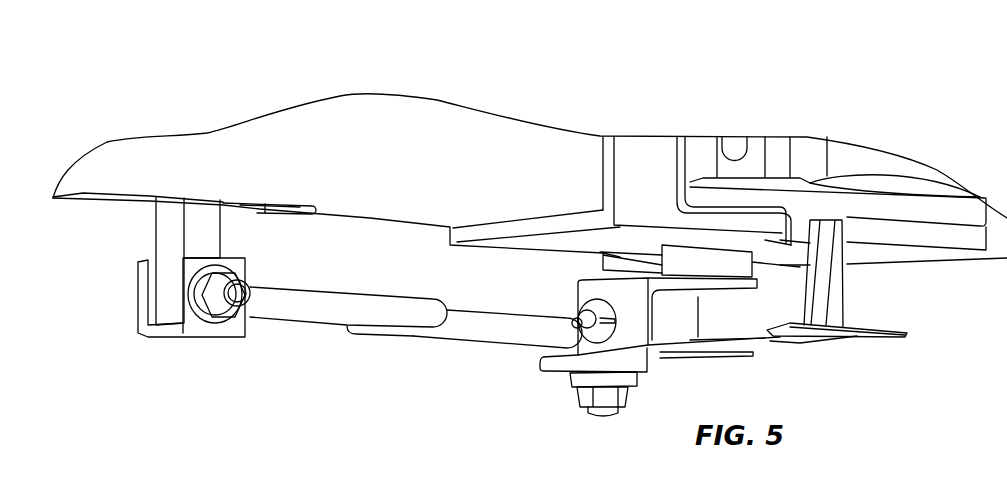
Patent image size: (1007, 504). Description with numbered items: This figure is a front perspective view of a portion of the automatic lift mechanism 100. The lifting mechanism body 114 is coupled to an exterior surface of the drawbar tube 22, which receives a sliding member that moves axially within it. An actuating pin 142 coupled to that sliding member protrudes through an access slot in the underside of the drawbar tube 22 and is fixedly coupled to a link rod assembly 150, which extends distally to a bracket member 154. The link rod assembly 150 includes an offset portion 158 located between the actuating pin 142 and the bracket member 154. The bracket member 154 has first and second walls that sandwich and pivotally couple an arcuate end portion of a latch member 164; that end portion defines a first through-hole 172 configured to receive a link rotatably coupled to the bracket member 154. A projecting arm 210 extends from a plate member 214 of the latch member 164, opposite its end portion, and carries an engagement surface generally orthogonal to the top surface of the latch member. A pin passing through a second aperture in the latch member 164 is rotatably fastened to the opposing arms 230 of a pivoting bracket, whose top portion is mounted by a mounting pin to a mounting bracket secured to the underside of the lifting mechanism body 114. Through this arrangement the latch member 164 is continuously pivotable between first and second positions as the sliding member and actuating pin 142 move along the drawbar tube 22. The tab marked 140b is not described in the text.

The drawbar tube 22 is at (393, 120).
The automatic lift mechanism 100 is at (946, 44).
The lifting mechanism body 114 is at (638, 155).
The actuating pin 142 is at (171, 233).
The tab 140b is at (250, 208).
The link rod assembly 150 is at (303, 313).
The bracket member 154 is at (547, 360).
The offset portion 158 is at (447, 334).
The latch member 164 is at (790, 343).
The first through-hole 172 is at (577, 320).
The projecting arm 210 is at (833, 310).
The plate member 214 is at (853, 335).
The opposing arms 230 is at (632, 335).